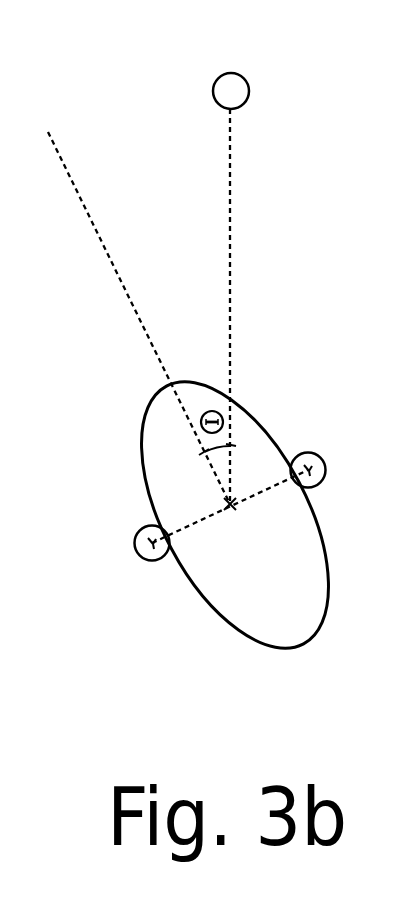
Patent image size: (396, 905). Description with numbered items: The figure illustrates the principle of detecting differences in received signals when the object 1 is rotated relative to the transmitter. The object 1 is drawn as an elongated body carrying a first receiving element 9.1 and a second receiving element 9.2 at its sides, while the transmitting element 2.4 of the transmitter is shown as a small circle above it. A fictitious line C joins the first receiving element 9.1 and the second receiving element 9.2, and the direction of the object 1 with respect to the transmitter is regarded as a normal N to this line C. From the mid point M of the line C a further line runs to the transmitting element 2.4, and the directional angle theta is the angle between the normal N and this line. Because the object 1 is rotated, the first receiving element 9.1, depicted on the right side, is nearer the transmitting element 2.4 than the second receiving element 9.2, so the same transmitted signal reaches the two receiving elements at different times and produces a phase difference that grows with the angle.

The transmitting element 2.4 is at (250, 90).
The object 1 is at (253, 631).
The first receiving element 9.1 is at (322, 453).
The second receiving element 9.2 is at (148, 561).
The normal N is at (232, 315).
The mid point of the line M is at (231, 509).
The line C is at (270, 493).